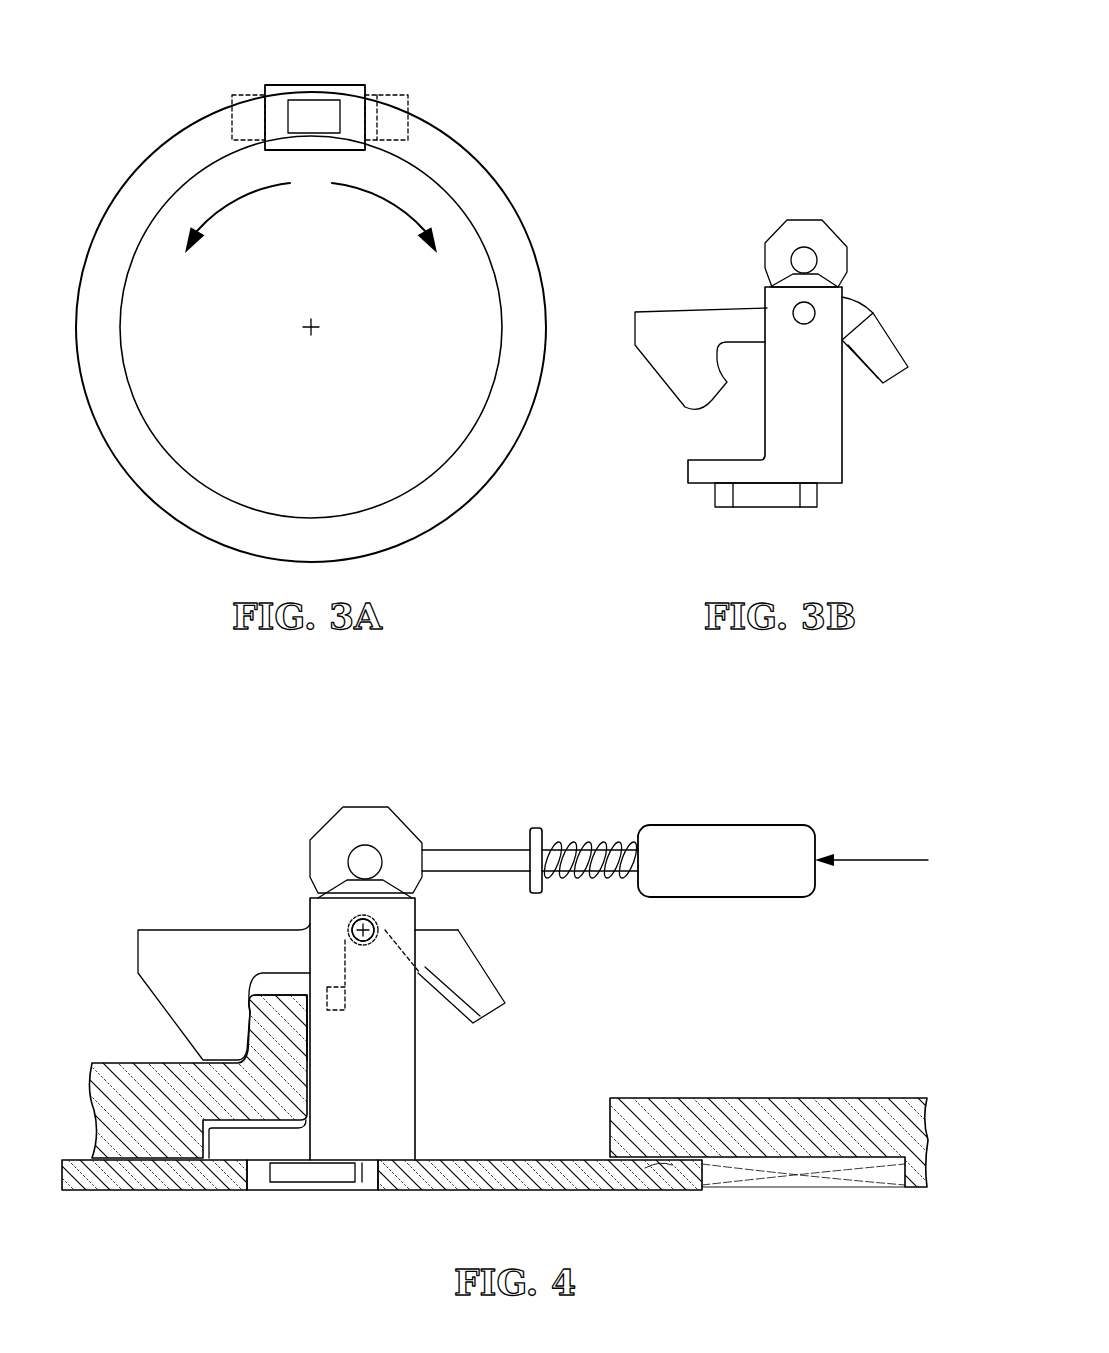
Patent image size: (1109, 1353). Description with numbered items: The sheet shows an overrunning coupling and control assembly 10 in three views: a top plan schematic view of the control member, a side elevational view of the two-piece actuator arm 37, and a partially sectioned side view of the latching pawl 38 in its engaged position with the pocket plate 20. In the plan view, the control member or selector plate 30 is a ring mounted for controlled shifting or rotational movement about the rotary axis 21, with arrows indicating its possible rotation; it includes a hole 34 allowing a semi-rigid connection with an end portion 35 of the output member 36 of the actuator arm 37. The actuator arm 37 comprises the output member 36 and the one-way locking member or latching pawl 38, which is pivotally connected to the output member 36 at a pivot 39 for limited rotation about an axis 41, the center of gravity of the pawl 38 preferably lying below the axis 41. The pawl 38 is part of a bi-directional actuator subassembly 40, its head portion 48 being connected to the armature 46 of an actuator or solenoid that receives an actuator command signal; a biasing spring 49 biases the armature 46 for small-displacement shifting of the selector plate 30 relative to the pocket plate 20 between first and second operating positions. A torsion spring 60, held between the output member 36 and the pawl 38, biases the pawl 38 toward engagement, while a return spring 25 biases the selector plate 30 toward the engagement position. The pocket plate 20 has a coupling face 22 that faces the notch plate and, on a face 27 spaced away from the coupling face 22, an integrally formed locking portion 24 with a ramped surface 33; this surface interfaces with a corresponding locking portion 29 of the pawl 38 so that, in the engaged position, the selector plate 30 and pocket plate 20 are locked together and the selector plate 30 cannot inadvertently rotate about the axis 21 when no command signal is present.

In FIG. 4, the overrunning coupling and control assembly 10 is at (487, 971).
In FIG. 4, the pocket plate 20 is at (838, 1080).
In FIG. 3A, the rotary axis 21 is at (318, 333).
In FIG. 4, the coupling face 22 is at (640, 1172).
In FIG. 4, the locking portion 24 is at (283, 1052).
In FIG. 4, the return spring 25 is at (806, 1192).
In FIG. 4, the face 27 is at (152, 1053).
In FIG. 3B, the locking portion 29 is at (697, 408).
In FIG. 4, the locking portion 29 is at (225, 1035).
In FIG. 3A, the selector plate 30 is at (545, 245).
In FIG. 4, the selector plate 30 is at (658, 1205).
In FIG. 4, the ramped surface 33 is at (300, 1005).
In FIG. 4, the hole 34 is at (378, 1172).
In FIG. 3B, the end portion 35 is at (822, 488).
In FIG. 4, the end portion 35 is at (318, 1192).
In FIG. 3B, the output member 36 is at (845, 442).
In FIG. 4, the output member 36 is at (418, 1120).
In FIG. 3A, the actuator arm 37 is at (278, 58).
In FIG. 3B, the actuator arm 37 is at (824, 346).
In FIG. 4, the actuator arm 37 is at (393, 982).
In FIG. 3B, the latching pawl 38 is at (796, 218).
In FIG. 4, the latching pawl 38 is at (342, 806).
In FIG. 3B, the pivot 39 is at (808, 326).
In FIG. 4, the pivot 39 is at (366, 945).
In FIG. 4, the bi-directional actuator subassembly 40 is at (676, 837).
In FIG. 4, the axis 41 is at (372, 922).
In FIG. 4, the armature 46 is at (476, 848).
In FIG. 3B, the head portion 48 is at (773, 233).
In FIG. 4, the head portion 48 is at (320, 832).
In FIG. 4, the biasing spring 49 is at (590, 880).
In FIG. 3B, the torsion spring 60 is at (870, 346).
In FIG. 4, the torsion spring 60 is at (452, 975).